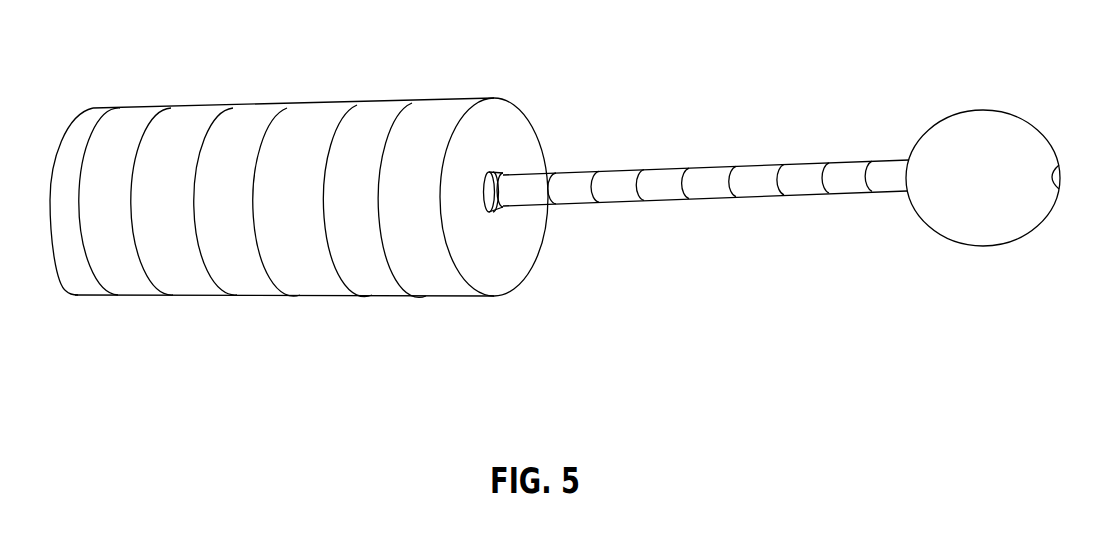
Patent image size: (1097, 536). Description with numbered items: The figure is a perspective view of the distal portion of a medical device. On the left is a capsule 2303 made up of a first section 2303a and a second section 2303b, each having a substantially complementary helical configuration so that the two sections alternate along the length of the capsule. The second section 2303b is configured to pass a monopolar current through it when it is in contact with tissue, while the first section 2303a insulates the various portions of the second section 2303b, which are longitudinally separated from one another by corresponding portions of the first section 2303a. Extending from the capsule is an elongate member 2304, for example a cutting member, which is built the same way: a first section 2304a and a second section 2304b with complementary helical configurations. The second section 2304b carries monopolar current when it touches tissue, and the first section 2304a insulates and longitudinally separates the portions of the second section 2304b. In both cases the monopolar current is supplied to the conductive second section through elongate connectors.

The capsule 2303 is at (299, 254).
The first section 2303a is at (422, 143).
The second section 2303b is at (357, 267).
The elongate member 2304 is at (772, 259).
The first section 2304a is at (850, 178).
The second section 2304b is at (800, 185).